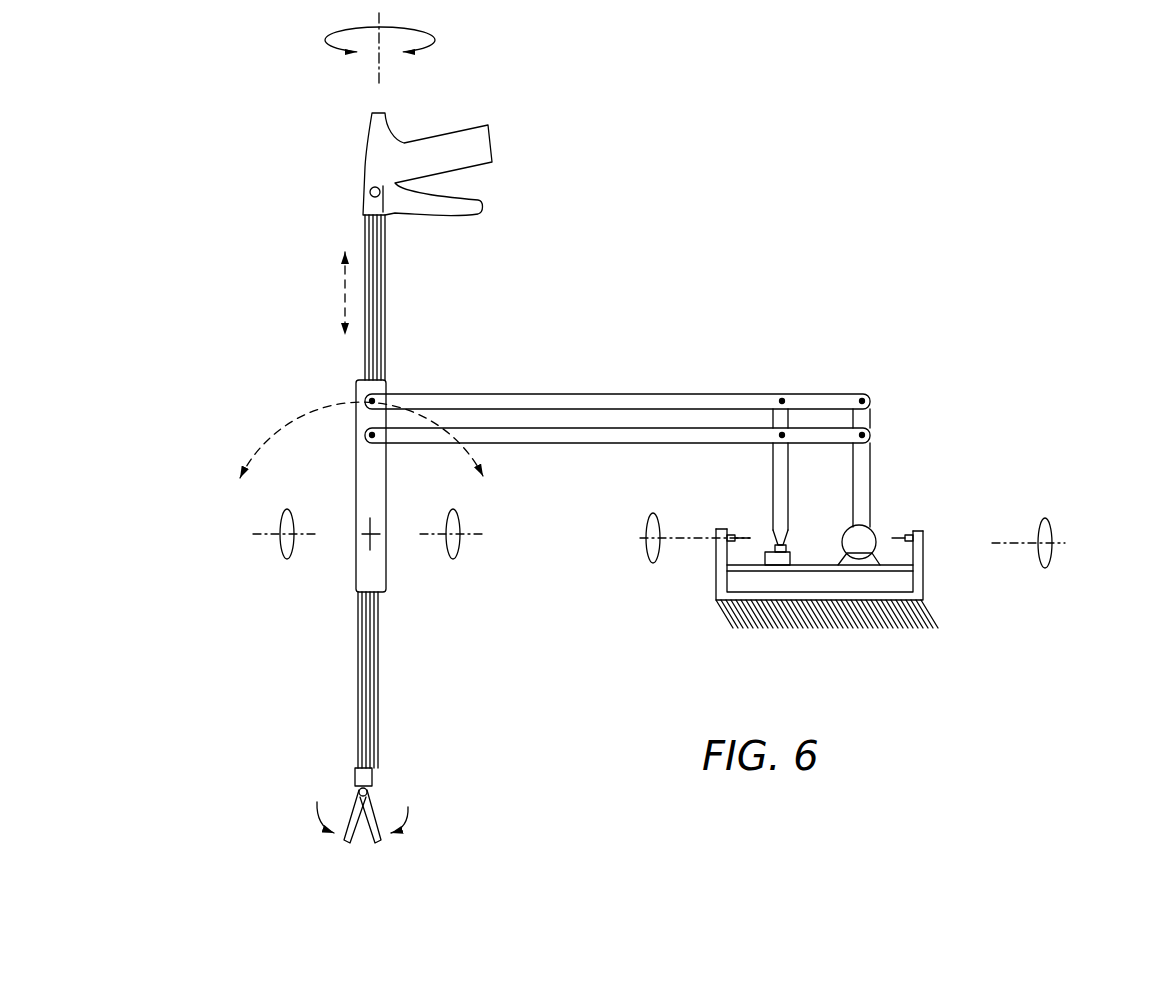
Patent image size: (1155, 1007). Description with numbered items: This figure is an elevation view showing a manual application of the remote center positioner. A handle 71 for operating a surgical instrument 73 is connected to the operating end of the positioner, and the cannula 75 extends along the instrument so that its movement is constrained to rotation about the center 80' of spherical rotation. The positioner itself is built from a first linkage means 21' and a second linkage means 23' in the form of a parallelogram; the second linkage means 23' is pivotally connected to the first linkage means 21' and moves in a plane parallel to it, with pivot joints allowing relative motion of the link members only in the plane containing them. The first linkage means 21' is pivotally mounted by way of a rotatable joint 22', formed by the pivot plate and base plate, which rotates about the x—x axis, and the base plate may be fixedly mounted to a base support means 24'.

The handle 71 is at (492, 142).
The cannula 75 is at (353, 478).
The center of spherical rotation 80' is at (268, 491).
The surgical instrument 73 is at (377, 810).
The second linkage means 23' is at (622, 382).
The first linkage means 21' is at (901, 514).
The rotatable joint 22' is at (715, 601).
The base support means 24' is at (911, 636).